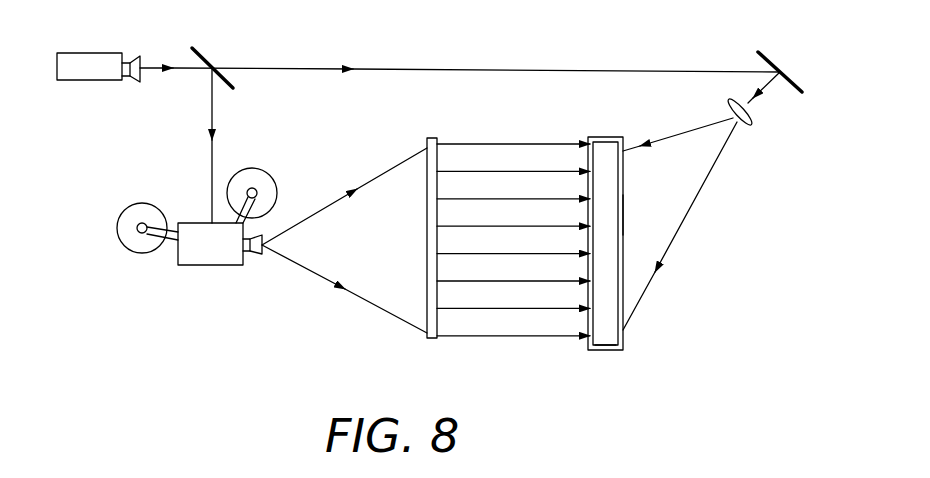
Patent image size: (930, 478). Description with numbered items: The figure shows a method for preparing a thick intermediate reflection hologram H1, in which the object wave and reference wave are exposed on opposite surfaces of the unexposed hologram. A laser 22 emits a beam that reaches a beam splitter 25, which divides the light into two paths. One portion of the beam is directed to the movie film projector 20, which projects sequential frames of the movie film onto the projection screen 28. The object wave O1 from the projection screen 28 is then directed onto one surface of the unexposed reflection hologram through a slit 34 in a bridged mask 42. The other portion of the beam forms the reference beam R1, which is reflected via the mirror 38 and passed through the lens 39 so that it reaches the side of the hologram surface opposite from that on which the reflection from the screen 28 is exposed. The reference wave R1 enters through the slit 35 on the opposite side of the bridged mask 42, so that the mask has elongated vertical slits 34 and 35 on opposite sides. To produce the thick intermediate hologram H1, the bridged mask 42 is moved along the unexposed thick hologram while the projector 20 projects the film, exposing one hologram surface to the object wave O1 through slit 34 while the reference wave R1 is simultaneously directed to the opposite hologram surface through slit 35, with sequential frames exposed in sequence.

The laser 22 is at (110, 53).
The beam splitter 25 is at (203, 50).
The projector 20 is at (220, 265).
The projection screen 28 is at (431, 340).
The slit 34 is at (589, 185).
The bridged mask 42 is at (597, 136).
The slit 35 is at (623, 215).
The mirror 38 is at (770, 50).
The lens 39 is at (748, 126).
The reference beam R1 is at (680, 232).
The object wave O1 is at (490, 337).
The thick intermediate reflection hologram H1 is at (608, 340).